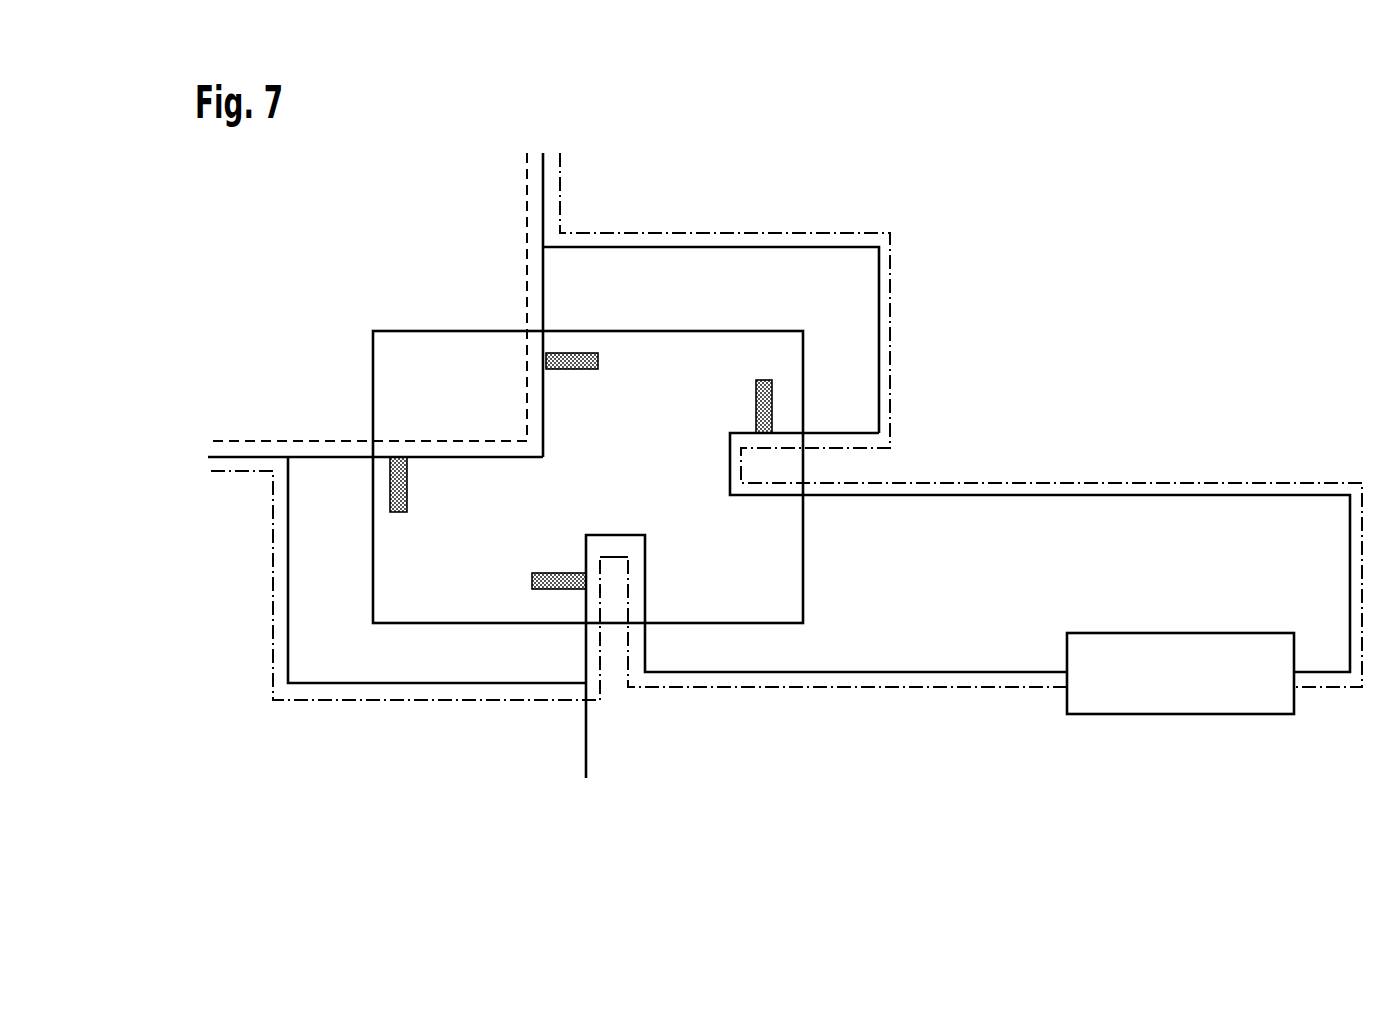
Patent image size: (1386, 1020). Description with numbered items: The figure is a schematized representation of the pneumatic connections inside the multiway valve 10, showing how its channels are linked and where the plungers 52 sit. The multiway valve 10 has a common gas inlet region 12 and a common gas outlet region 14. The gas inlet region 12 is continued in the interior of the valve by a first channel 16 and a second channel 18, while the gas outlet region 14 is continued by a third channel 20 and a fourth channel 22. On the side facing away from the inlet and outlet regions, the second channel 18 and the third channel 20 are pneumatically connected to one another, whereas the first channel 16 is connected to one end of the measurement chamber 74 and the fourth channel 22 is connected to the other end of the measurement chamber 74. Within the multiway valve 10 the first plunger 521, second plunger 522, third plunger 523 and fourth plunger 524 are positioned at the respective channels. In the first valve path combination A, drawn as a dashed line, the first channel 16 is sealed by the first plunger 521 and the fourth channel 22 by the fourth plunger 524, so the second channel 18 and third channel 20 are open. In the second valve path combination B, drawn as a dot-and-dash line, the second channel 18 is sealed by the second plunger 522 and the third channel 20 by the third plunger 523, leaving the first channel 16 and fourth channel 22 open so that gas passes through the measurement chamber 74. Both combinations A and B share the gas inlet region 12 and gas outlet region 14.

The multiway valve 10 is at (335, 295).
The gas inlet region 12 is at (323, 683).
The gas outlet region 14 is at (833, 247).
The first channel 16 is at (586, 605).
The second channel 18 is at (423, 457).
The third channel 20 is at (543, 400).
The fourth channel 22 is at (792, 433).
The plungers 52 is at (581, 479).
The first plunger 521 is at (532, 582).
The second plunger 522 is at (407, 495).
The third plunger 523 is at (582, 369).
The fourth plunger 524 is at (756, 397).
The measurement chamber 74 is at (1191, 688).
The first valve path combination A is at (527, 200).
The second valve path combination B is at (560, 190).